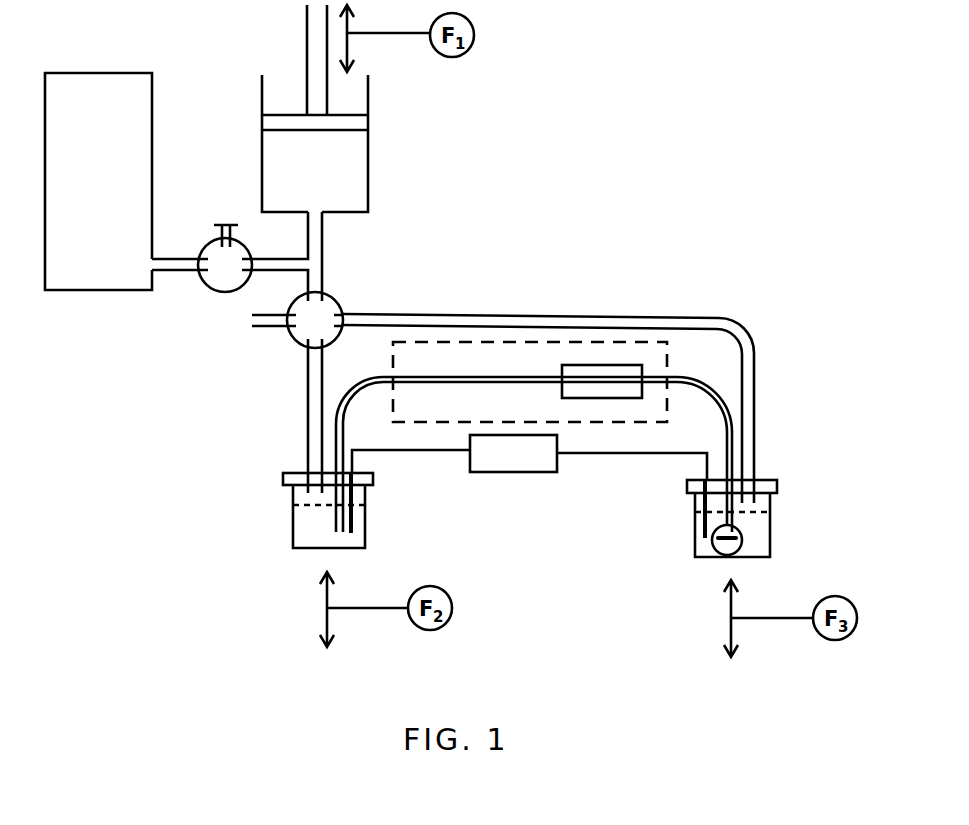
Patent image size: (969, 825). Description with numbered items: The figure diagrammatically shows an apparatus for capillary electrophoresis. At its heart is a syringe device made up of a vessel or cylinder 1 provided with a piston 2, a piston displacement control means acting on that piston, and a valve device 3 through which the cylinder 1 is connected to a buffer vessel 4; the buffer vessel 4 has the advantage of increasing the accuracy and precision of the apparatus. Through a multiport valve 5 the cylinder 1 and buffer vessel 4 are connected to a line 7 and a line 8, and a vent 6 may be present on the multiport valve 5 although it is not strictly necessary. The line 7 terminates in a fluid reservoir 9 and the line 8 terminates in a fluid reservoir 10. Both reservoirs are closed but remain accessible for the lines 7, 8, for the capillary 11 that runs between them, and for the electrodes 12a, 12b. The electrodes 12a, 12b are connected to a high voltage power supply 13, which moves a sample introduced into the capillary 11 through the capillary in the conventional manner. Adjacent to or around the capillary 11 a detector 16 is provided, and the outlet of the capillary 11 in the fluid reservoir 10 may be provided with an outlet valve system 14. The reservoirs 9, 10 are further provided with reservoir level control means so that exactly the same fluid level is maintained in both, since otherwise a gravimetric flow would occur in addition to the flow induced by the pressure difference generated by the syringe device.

The vessel or cylinder 1 is at (368, 165).
The piston 2 is at (288, 118).
The valve device 3 is at (260, 252).
The buffer vessel 4 is at (103, 157).
The multiport valve 5 is at (312, 309).
The vent 6 is at (260, 319).
The line 7 is at (305, 405).
The line 8 is at (576, 315).
The fluid reservoir 9 is at (302, 517).
The fluid reservoir 10 is at (695, 550).
The capillary 11 is at (355, 395).
The electrode 12a is at (354, 520).
The electrode 12b is at (700, 535).
The high voltage power supply 13 is at (523, 462).
The outlet valve system 14 is at (740, 537).
The detector 16 is at (572, 372).